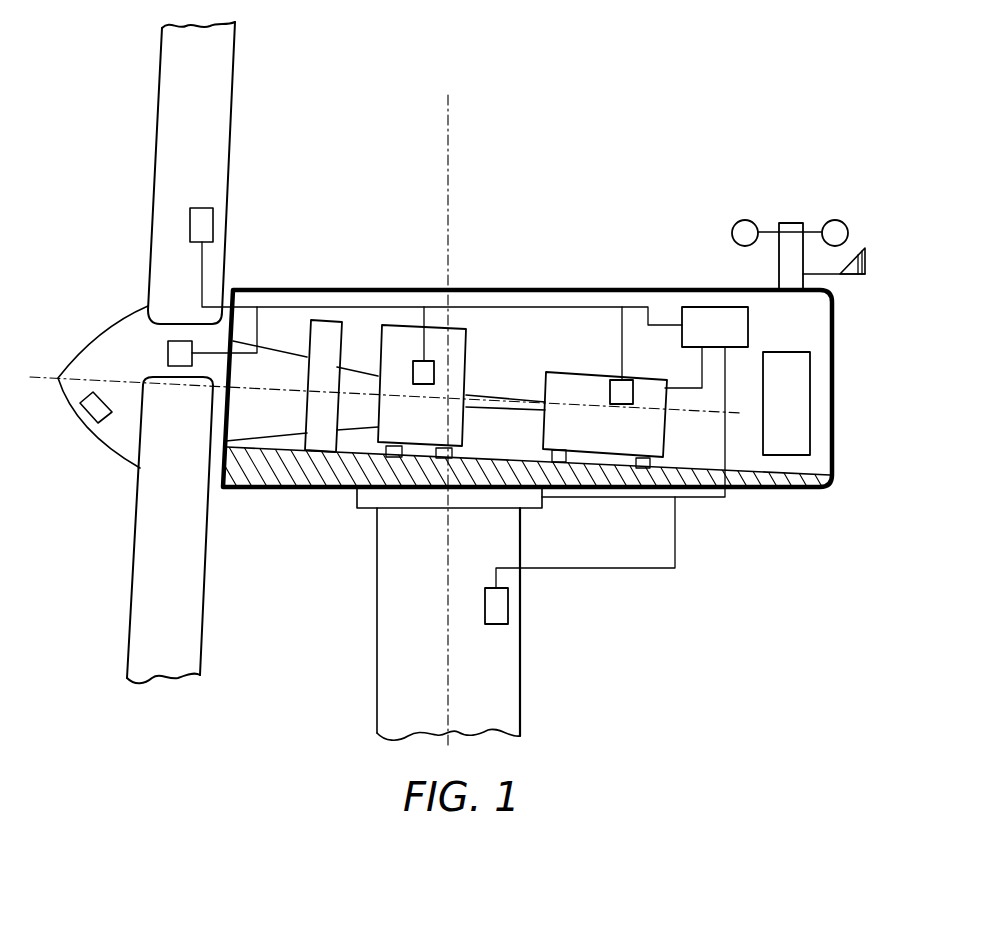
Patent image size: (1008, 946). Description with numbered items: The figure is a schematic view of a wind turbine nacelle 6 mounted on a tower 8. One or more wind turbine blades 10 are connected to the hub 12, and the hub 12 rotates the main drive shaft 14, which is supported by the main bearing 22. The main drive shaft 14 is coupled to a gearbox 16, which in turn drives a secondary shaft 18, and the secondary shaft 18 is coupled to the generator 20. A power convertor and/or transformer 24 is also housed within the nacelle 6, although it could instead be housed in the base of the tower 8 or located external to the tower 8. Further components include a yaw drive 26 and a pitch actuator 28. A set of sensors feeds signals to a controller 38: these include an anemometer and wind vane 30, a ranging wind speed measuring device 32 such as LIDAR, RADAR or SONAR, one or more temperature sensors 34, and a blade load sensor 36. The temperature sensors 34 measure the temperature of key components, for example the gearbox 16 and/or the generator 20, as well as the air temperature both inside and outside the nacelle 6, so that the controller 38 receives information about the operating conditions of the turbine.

The wind turbine nacelle 6 is at (840, 456).
The tower 8 is at (520, 700).
The wind turbine blade 10 is at (158, 128).
The hub 12 is at (105, 322).
The main drive shaft 14 is at (277, 352).
The gearbox 16 is at (402, 325).
The secondary shaft 18 is at (507, 395).
The generator 20 is at (565, 372).
The main bearing 22 is at (327, 320).
The power convertor and/or transformer 24 is at (810, 365).
The yaw drive 26 is at (545, 510).
The pitch actuator 28 is at (168, 353).
The anemometer and wind vane 30 is at (793, 223).
The ranging wind speed measuring device 32 is at (80, 412).
The temperature sensor 34 is at (422, 384).
The blade load sensor 36 is at (213, 222).
The controller 38 is at (705, 307).